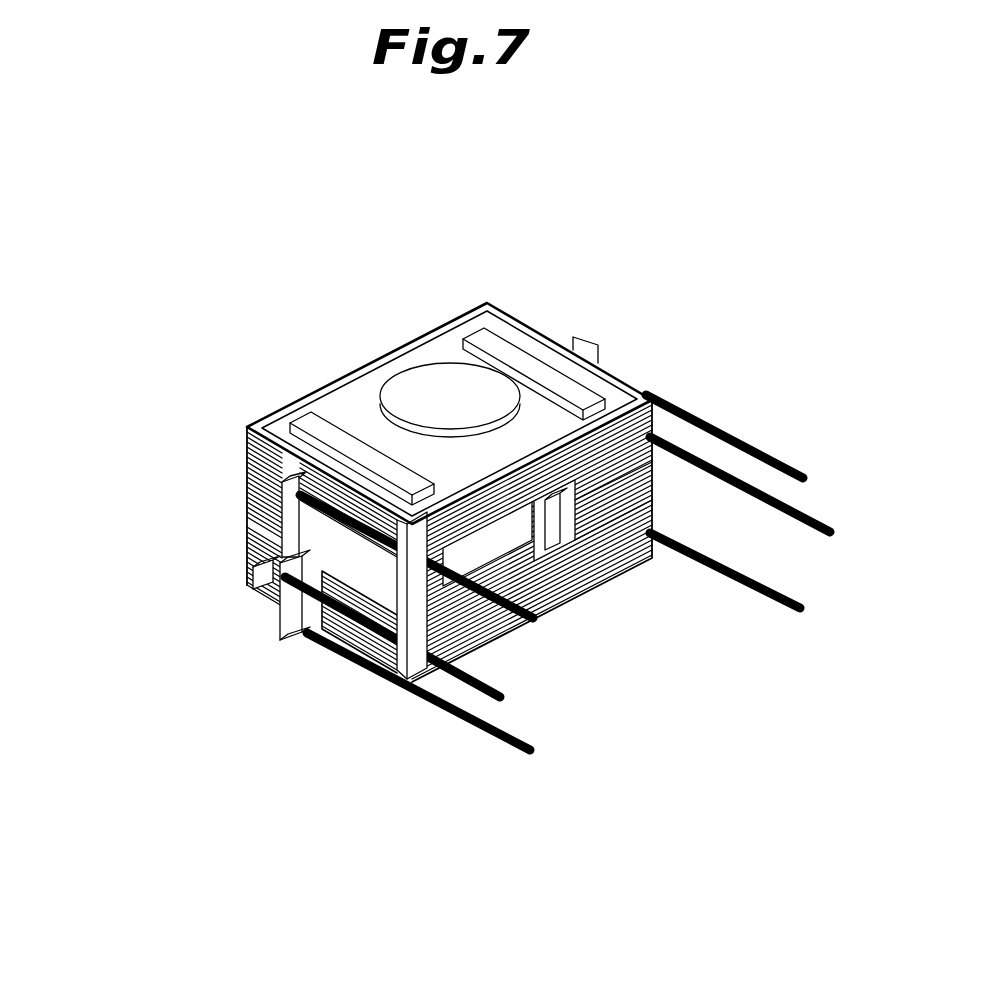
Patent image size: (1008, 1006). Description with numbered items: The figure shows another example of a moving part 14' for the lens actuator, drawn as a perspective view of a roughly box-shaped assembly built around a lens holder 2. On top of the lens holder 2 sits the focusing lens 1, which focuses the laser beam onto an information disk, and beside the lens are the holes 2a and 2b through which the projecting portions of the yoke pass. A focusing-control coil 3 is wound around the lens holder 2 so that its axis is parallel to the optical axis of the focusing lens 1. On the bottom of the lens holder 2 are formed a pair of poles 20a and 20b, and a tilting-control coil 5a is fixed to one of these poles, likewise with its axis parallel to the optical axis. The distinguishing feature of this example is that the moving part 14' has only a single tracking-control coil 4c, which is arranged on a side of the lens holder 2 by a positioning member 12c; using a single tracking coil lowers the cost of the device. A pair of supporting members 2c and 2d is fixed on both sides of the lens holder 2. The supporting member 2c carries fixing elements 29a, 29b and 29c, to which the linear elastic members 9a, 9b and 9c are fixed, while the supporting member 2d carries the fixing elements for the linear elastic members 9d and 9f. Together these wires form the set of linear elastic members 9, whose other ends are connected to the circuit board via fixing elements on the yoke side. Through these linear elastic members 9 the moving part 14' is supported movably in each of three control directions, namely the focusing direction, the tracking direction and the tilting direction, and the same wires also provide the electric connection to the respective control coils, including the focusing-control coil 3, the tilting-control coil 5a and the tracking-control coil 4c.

The moving part 14' is at (449, 351).
The focusing lens 1 is at (432, 385).
The lens holder 2 is at (352, 330).
The hole 2a is at (317, 392).
The hole 2b is at (468, 325).
The supporting member 2c is at (262, 587).
The supporting member 2d is at (585, 342).
The focusing-control coil 3 is at (245, 442).
The fixing element 29a is at (247, 473).
The linear elastic member 9a is at (250, 527).
The tilting-control coil 5a is at (262, 548).
The fixing element 29b is at (262, 612).
The fixing element 29c is at (300, 600).
The linear elastic member 9b is at (280, 587).
The linear elastic member 9c is at (430, 690).
The pole 20a is at (465, 668).
The pole 20b is at (640, 583).
The tracking-control coil 4c is at (490, 615).
The positioning member 12c is at (540, 565).
The linear elastic member 9d is at (673, 400).
The linear elastic members 9 is at (712, 467).
The linear elastic member 9f is at (730, 570).